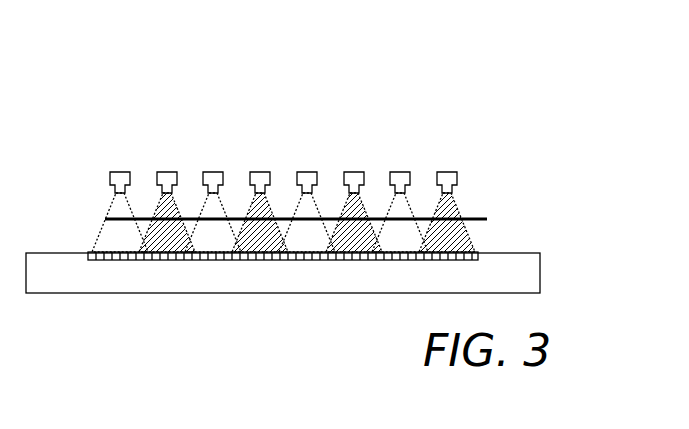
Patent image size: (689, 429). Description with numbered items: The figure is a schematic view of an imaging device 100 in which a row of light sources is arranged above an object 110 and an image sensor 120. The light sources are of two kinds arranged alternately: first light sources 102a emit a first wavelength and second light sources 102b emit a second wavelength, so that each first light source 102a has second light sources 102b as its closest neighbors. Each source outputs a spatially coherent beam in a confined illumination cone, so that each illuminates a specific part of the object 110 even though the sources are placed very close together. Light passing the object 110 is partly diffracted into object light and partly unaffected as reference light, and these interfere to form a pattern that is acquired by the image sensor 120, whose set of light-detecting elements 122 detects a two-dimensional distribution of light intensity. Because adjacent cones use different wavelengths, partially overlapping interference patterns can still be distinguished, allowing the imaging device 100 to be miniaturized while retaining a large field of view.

The imaging device 100 is at (112, 90).
The first light sources 102a is at (400, 172).
The second light sources 102b is at (167, 172).
The object 110 is at (477, 218).
The image sensor 120 is at (540, 273).
The light-detecting elements 122 is at (193, 260).